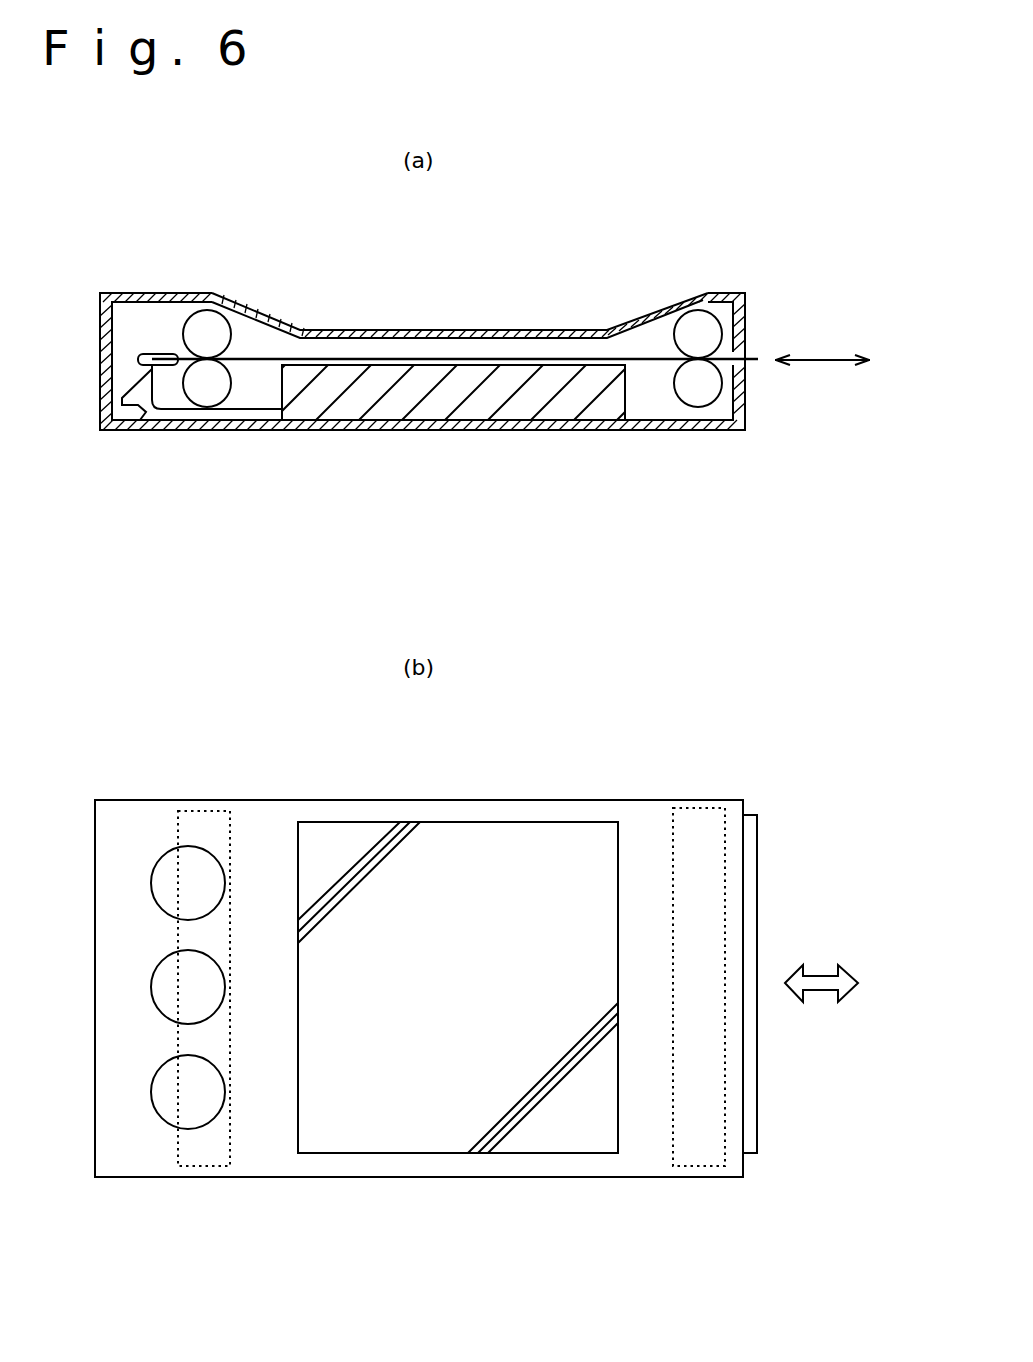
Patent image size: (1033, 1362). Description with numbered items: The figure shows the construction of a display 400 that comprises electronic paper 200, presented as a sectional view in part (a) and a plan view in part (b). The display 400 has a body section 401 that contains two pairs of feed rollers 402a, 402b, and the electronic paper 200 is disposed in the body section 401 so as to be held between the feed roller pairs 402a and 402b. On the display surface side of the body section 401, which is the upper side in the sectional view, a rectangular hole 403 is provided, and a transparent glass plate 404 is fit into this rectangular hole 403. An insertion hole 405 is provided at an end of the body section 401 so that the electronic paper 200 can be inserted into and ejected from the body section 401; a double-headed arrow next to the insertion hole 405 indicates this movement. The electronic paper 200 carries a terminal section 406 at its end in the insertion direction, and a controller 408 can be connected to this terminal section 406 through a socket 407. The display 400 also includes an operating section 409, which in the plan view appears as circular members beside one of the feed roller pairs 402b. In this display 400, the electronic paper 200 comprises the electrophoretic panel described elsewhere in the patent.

The electronic paper 200 is at (435, 355).
The display 400 is at (738, 233).
The body section 401 is at (170, 297).
The feed roller pair 402a is at (227, 307).
The feed roller pair 402b is at (700, 305).
The rectangular hole 403 is at (360, 822).
The transparent glass plate 404 is at (528, 332).
The insertion hole 405 is at (750, 354).
The terminal section 406 is at (152, 356).
The socket 407 is at (140, 411).
The controller 408 is at (405, 421).
The operating section 409 is at (160, 848).